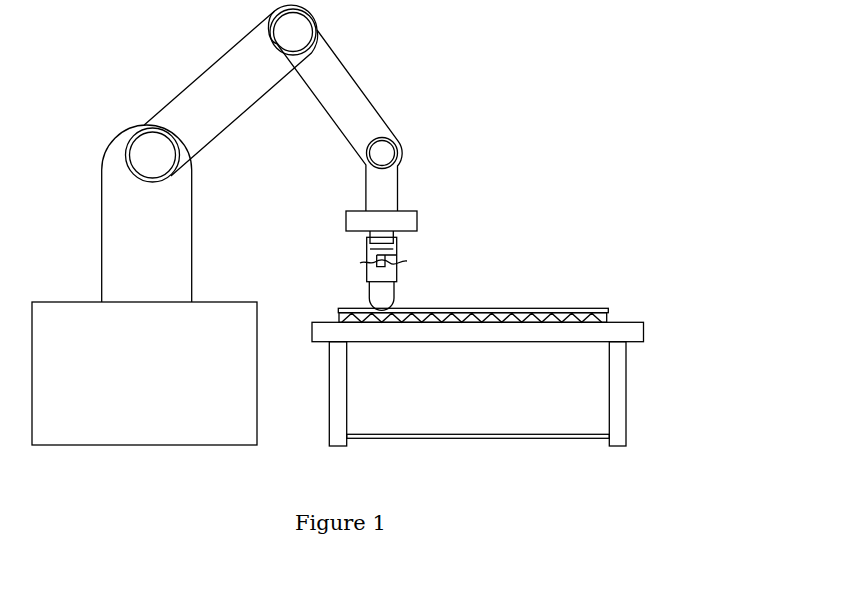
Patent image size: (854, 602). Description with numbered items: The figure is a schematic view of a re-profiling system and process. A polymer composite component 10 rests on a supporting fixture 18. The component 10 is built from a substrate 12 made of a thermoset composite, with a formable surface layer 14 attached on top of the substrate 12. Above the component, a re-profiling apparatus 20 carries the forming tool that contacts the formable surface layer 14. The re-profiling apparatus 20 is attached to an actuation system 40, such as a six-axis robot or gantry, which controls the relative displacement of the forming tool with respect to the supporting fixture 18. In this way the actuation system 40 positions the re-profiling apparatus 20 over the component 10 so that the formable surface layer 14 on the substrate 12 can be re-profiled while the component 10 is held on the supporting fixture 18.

The polymer composite component 10 is at (546, 239).
The substrate 12 is at (560, 318).
The formable surface layer 14 is at (467, 307).
The supporting fixture 18 is at (430, 330).
The re-profiling apparatus 20 is at (395, 272).
The actuation system 40 is at (188, 88).